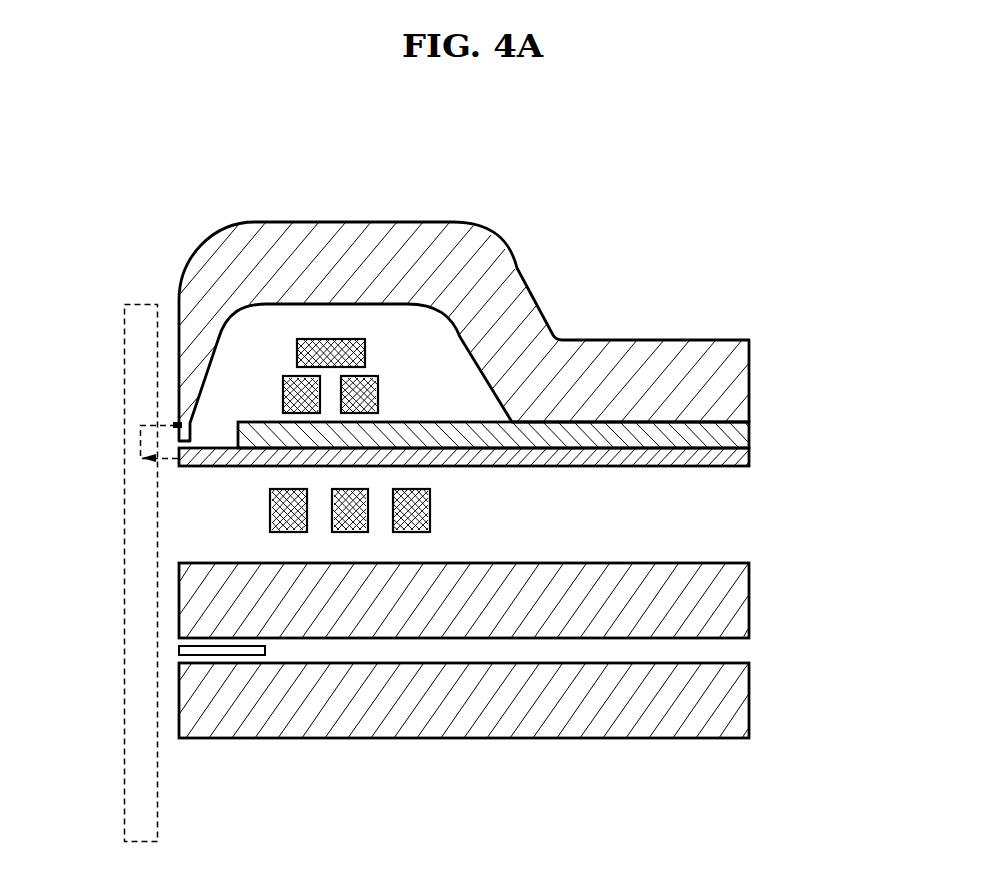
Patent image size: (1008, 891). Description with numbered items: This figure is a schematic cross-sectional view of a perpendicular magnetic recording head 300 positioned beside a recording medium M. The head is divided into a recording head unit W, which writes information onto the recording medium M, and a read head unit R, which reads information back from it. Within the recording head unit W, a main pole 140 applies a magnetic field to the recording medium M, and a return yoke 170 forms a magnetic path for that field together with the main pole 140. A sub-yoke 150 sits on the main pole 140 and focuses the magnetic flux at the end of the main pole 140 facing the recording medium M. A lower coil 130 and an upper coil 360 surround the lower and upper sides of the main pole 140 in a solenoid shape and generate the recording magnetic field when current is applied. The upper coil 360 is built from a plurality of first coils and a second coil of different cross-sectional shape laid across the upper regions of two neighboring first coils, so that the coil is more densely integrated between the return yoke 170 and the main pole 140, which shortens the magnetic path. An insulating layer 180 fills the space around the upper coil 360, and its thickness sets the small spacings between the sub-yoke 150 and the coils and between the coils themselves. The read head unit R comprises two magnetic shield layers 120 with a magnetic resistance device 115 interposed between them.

The perpendicular magnetic recording head 300 is at (680, 211).
The upper coil 360 is at (397, 345).
The insulating layer 180 is at (447, 373).
The return yoke 170 is at (740, 376).
The sub-yoke 150 is at (740, 437).
The main pole 140 is at (740, 463).
The lower coil 130 is at (445, 513).
The magnetic shield layers 120 is at (740, 607).
The magnetic resistance device 115 is at (180, 650).
The recording medium M is at (138, 302).
The recording head unit W is at (842, 342).
The read head unit R is at (842, 563).